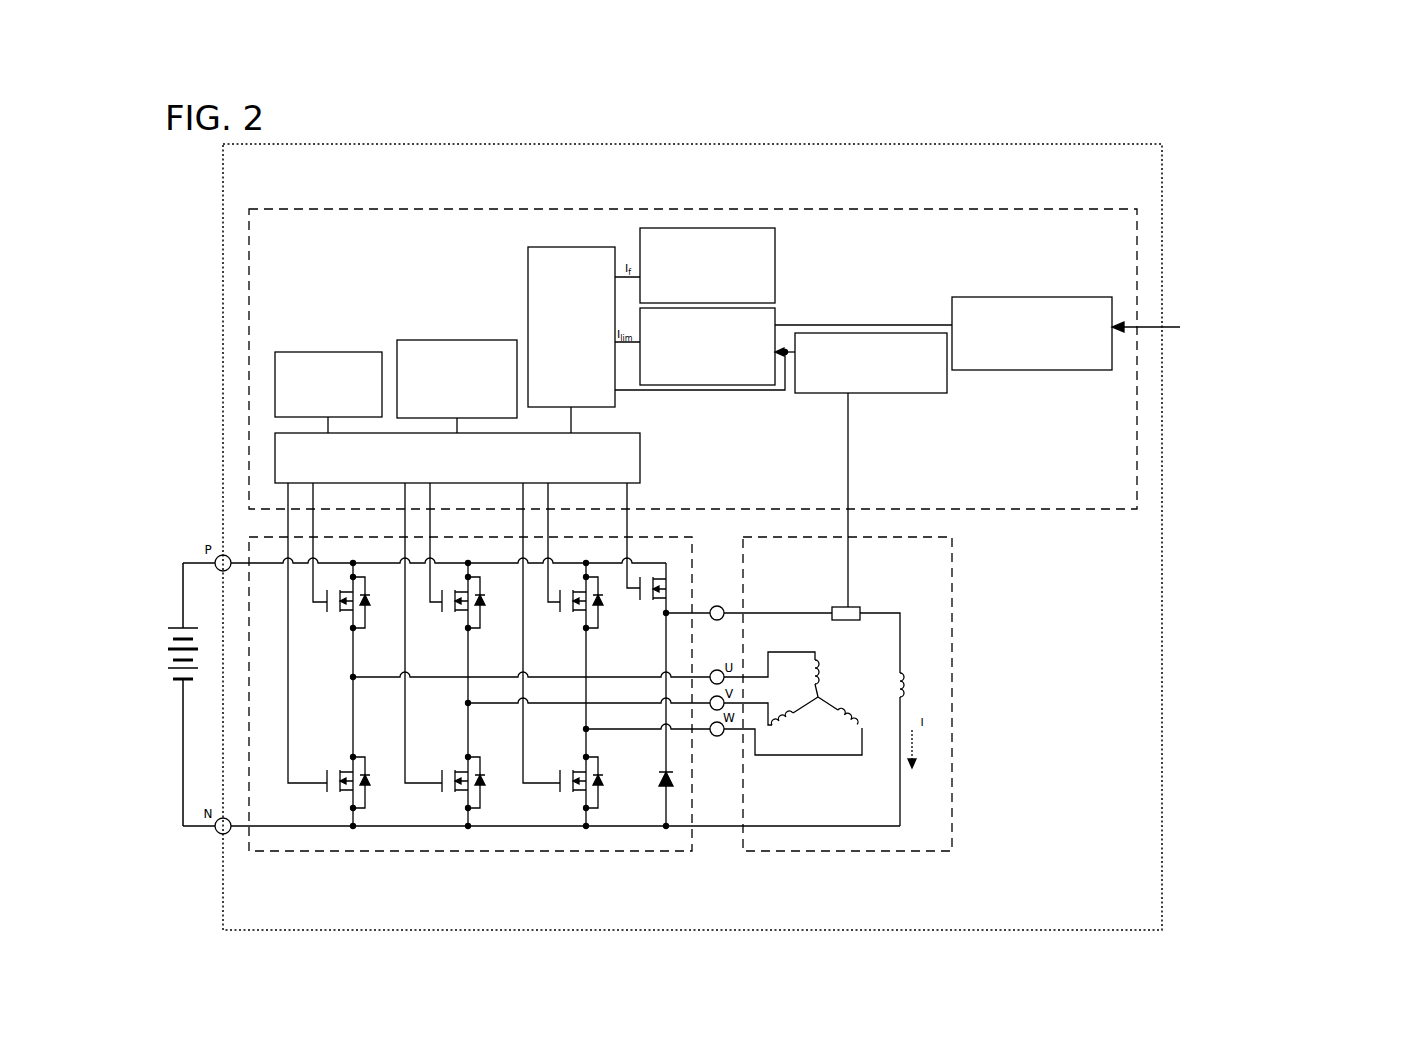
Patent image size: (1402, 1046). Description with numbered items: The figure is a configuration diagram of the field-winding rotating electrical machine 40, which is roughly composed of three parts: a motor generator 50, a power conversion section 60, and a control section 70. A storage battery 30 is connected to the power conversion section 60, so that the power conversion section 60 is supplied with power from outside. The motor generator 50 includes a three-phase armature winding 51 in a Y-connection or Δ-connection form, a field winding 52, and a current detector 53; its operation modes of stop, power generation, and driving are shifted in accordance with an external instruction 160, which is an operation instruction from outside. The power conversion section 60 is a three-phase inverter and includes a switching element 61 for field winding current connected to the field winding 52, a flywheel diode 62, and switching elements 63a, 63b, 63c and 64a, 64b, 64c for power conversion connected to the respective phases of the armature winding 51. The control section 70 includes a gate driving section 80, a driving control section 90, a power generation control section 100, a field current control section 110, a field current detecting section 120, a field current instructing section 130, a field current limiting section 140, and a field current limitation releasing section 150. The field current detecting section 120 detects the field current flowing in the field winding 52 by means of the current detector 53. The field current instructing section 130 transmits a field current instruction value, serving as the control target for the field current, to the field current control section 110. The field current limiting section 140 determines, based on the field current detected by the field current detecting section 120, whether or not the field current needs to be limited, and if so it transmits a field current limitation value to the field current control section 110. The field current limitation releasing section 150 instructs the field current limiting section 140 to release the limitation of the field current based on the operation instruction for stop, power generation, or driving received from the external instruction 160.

The storage battery 30 is at (166, 636).
The field-winding rotating electrical machine 40 is at (222, 353).
The motor generator 50 is at (820, 852).
The three-phase armature winding 51 is at (820, 690).
The field winding 52 is at (905, 680).
The current detector 53 is at (862, 607).
The power conversion section 60 is at (455, 852).
The switching element for field winding current 61 is at (647, 607).
The flywheel diode 62 is at (660, 792).
The switching element for power conversion 63a is at (333, 618).
The switching element for power conversion 63b is at (449, 618).
The switching element for power conversion 63c is at (566, 618).
The switching element for power conversion 64a is at (336, 770).
The switching element for power conversion 64b is at (452, 770).
The switching element for power conversion 64c is at (570, 770).
The control section 70 is at (618, 209).
The gate driving section 80 is at (640, 462).
The driving control section 90 is at (324, 352).
The power generation control section 100 is at (452, 340).
The field current control section 110 is at (528, 268).
The field current detecting section 120 is at (900, 393).
The field current instructing section 130 is at (775, 258).
The field current limiting section 140 is at (775, 320).
The field current limitation releasing section 150 is at (1045, 297).
The external instruction 160 is at (1325, 330).